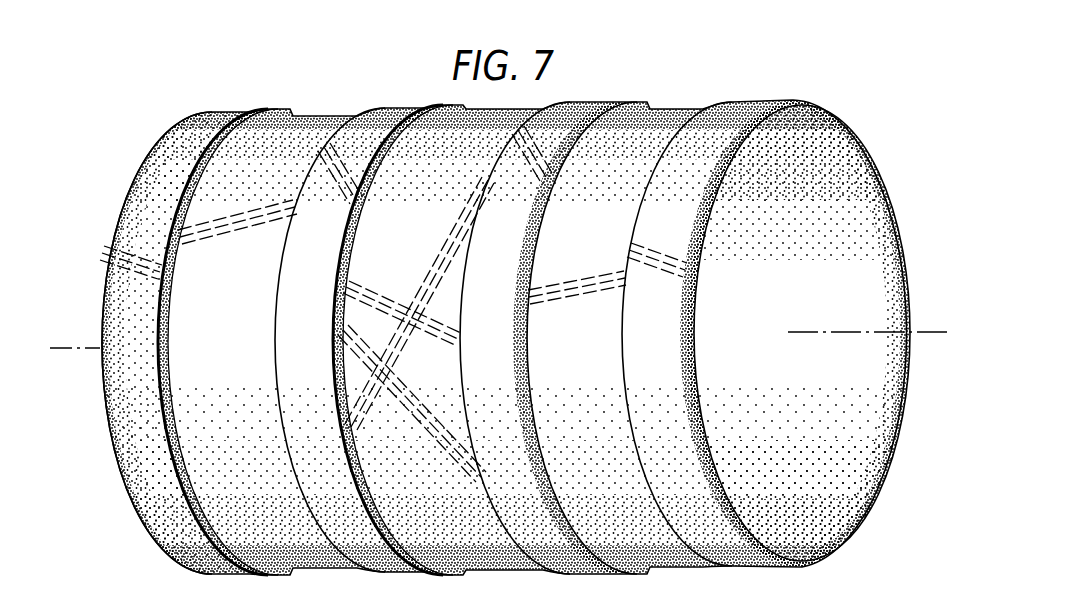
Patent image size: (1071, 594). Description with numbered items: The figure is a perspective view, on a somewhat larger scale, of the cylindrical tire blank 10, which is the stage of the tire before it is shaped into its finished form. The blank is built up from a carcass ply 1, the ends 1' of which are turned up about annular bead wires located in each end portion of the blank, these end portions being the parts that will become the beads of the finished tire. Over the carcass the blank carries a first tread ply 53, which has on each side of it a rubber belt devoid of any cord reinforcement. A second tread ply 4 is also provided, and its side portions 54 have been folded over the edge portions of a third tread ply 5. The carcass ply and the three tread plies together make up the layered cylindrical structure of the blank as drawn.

The cylindrical tire blank 10 is at (864, 115).
The carcass ply 1 is at (402, 252).
The ends of the carcass ply 1' is at (393, 239).
The side portions of the second tread ply 54 is at (334, 179).
The third tread ply 5 is at (386, 300).
The second tread ply 4 is at (402, 348).
The first tread ply 53 is at (424, 425).